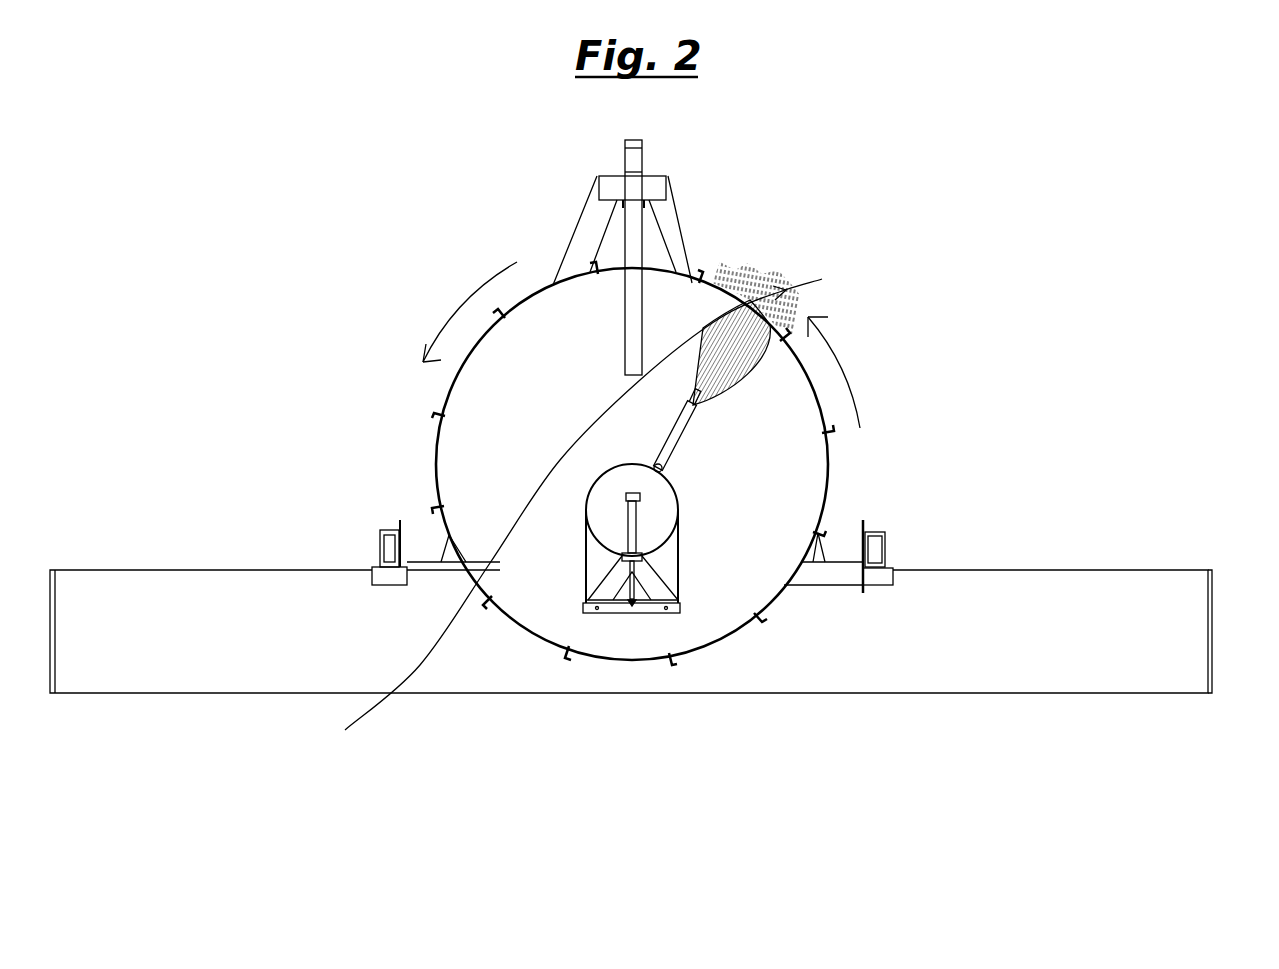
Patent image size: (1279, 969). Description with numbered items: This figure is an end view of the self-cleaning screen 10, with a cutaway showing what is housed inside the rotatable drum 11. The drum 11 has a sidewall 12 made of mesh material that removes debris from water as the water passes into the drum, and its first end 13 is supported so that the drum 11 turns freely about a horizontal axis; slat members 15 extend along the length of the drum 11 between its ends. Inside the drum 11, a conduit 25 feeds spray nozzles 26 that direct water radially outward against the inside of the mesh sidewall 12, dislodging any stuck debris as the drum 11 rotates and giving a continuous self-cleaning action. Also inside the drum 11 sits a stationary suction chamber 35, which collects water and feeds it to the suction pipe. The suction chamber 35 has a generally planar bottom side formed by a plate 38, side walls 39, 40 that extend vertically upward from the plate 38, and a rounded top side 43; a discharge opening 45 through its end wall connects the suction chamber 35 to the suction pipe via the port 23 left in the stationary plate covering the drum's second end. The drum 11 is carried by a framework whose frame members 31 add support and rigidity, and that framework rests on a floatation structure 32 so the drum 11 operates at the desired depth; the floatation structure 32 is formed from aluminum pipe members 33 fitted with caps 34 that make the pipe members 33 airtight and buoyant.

The self-cleaning screen 10 is at (918, 200).
The rotatable drum 11 is at (810, 468).
The sidewall 12 is at (446, 412).
The first end 13 is at (457, 448).
The slat members 15 is at (564, 657).
The port 23 is at (665, 520).
The conduit 25 is at (662, 471).
The spray nozzles 26 is at (690, 420).
The frame members 31 is at (673, 227).
The floatation structure 32 is at (262, 672).
The pipe members 33 is at (1085, 590).
The caps 34 is at (1212, 647).
The suction chamber 35 is at (589, 518).
The plate 38 is at (617, 612).
The side wall 39 is at (587, 570).
The side wall 40 is at (680, 590).
The rounded top side 43 is at (664, 465).
The discharge opening 45 is at (612, 487).